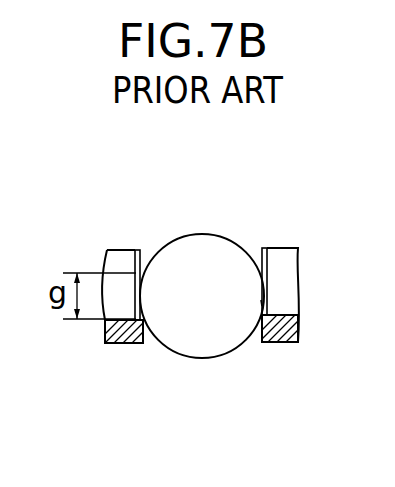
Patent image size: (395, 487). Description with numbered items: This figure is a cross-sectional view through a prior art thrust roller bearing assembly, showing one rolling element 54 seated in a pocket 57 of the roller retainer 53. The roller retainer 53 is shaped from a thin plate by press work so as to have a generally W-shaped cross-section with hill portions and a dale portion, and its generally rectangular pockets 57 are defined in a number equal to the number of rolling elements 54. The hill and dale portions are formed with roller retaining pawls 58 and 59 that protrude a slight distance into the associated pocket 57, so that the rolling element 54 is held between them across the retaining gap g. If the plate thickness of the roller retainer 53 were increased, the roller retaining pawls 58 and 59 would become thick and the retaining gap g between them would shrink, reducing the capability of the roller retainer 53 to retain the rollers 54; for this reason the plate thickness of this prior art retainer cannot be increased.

The roller retainer 53 is at (118, 250).
The rolling elements 54 is at (220, 256).
The pocket 57 is at (261, 303).
The roller retaining pawl 58 is at (135, 343).
The roller retaining pawl 59 is at (143, 264).